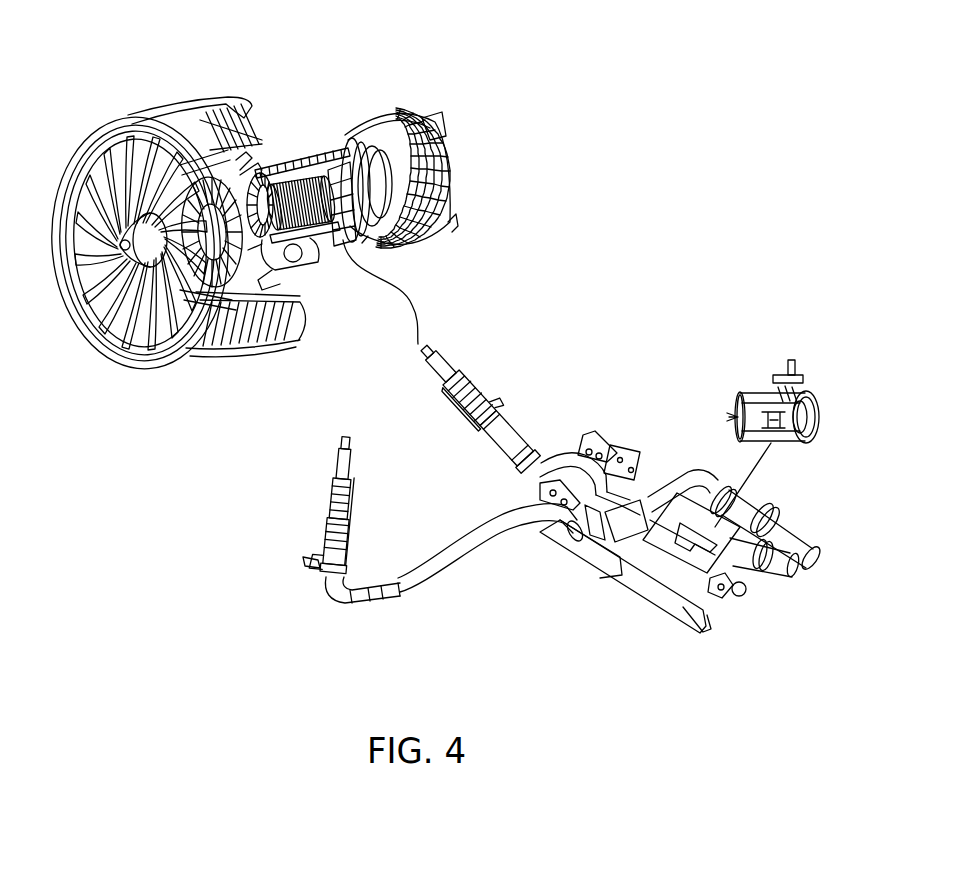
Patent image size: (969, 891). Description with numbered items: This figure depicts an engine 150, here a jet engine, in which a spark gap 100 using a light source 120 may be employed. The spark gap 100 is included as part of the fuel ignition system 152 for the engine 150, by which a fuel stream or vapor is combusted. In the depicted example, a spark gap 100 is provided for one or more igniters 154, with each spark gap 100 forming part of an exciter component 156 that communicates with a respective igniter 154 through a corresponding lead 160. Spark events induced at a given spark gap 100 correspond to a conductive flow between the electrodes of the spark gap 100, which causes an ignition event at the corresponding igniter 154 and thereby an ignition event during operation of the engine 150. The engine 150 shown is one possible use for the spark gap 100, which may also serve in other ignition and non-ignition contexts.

The spark gap 100 is at (747, 360).
The light source 120 is at (800, 372).
The engine 150 is at (232, 67).
The fuel ignition system 152 is at (474, 606).
The igniter 154 is at (418, 356).
The exciter component 156 is at (655, 437).
The lead 160 is at (507, 442).